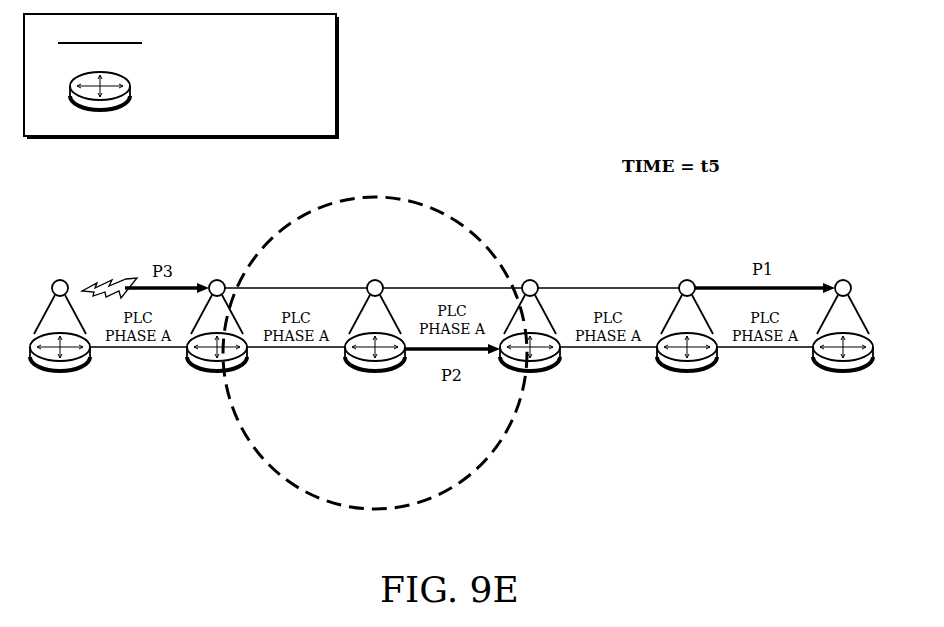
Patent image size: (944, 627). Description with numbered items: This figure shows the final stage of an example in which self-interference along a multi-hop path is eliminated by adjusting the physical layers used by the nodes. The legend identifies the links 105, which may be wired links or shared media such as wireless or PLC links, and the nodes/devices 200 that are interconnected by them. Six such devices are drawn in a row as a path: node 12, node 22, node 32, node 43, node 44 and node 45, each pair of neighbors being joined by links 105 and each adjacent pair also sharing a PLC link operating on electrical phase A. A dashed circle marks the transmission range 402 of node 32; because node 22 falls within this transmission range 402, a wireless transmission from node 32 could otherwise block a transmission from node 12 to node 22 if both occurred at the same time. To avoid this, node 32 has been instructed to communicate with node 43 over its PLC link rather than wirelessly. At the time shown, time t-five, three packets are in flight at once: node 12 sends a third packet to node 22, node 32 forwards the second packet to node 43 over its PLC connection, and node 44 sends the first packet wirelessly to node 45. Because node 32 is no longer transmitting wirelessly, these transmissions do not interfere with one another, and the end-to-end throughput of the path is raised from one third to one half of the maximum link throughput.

The links 105 is at (167, 43).
The nodes/devices 200 is at (180, 91).
The transmission range 402 is at (474, 218).
The node 12 is at (60, 344).
The node 22 is at (214, 344).
The node 32 is at (375, 344).
The node 43 is at (532, 344).
The node 44 is at (687, 344).
The node 45 is at (843, 344).